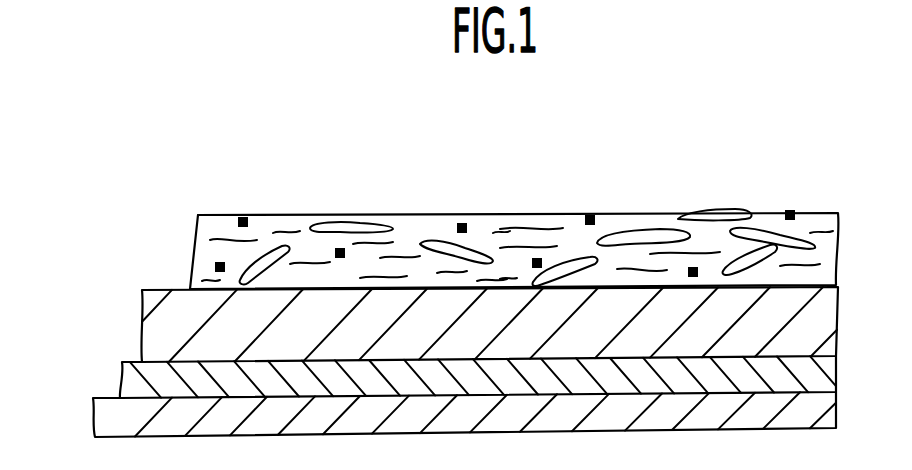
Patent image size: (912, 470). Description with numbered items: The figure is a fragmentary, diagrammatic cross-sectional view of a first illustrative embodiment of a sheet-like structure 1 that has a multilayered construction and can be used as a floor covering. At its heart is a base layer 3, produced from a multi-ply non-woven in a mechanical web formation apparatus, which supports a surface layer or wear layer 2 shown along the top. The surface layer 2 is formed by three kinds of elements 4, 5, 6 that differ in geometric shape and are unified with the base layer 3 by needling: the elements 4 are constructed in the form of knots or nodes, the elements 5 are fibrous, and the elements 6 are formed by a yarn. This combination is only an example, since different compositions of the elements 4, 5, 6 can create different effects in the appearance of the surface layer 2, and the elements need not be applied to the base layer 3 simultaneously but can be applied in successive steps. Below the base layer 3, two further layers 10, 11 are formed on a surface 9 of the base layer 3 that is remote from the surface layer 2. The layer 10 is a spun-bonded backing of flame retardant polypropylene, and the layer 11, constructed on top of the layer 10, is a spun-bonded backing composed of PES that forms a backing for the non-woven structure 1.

The sheet-like structure 1 is at (778, 163).
The surface layer 2 is at (431, 215).
The base layer 3 is at (155, 326).
The elements 4 is at (220, 262).
The elements 5 is at (540, 258).
The elements 6 is at (630, 228).
The surface 9 is at (163, 289).
The layer 10 is at (132, 381).
The layer 11 is at (117, 420).